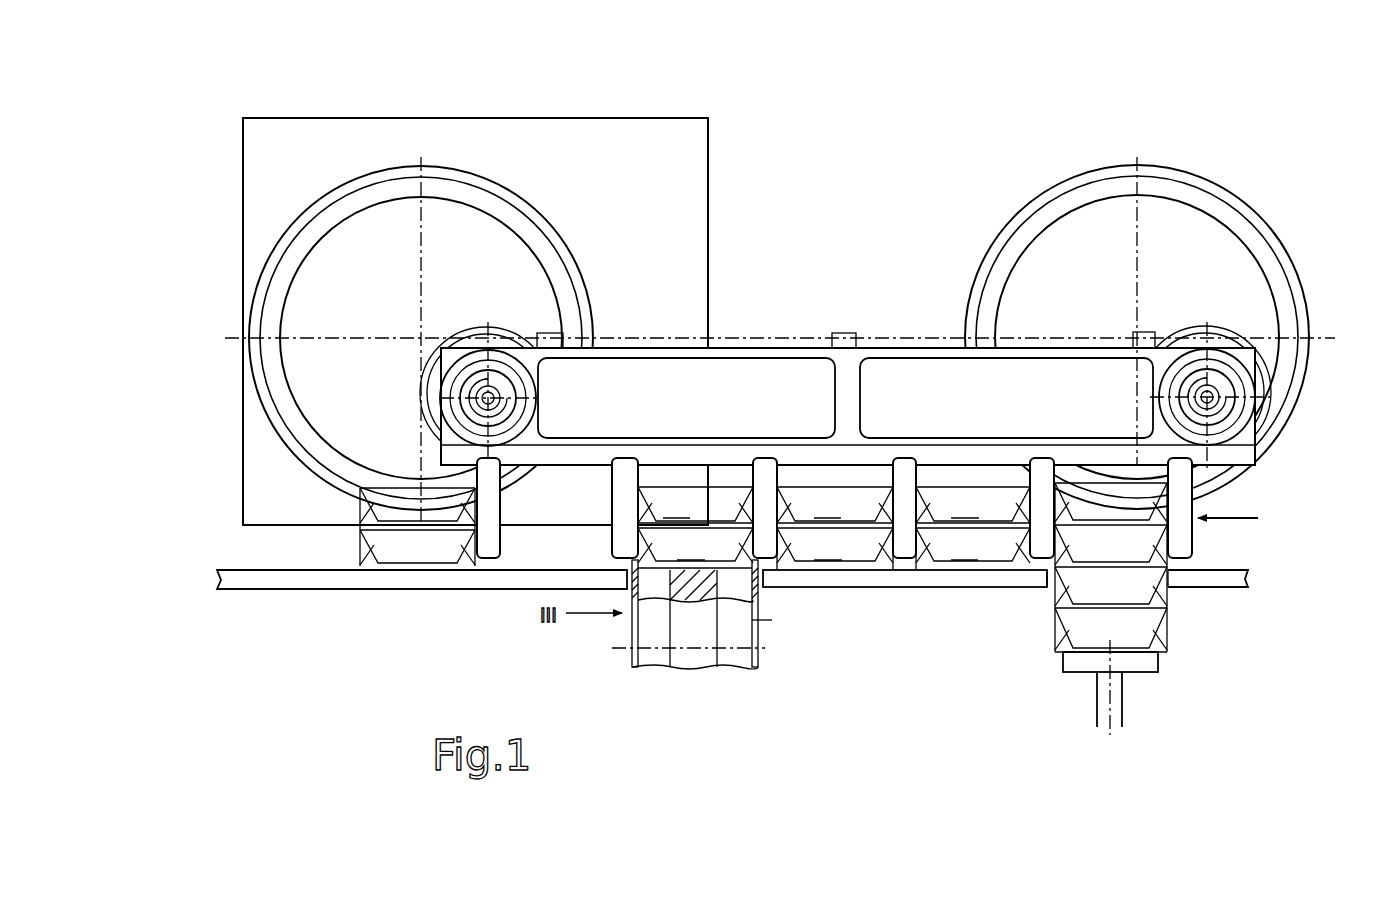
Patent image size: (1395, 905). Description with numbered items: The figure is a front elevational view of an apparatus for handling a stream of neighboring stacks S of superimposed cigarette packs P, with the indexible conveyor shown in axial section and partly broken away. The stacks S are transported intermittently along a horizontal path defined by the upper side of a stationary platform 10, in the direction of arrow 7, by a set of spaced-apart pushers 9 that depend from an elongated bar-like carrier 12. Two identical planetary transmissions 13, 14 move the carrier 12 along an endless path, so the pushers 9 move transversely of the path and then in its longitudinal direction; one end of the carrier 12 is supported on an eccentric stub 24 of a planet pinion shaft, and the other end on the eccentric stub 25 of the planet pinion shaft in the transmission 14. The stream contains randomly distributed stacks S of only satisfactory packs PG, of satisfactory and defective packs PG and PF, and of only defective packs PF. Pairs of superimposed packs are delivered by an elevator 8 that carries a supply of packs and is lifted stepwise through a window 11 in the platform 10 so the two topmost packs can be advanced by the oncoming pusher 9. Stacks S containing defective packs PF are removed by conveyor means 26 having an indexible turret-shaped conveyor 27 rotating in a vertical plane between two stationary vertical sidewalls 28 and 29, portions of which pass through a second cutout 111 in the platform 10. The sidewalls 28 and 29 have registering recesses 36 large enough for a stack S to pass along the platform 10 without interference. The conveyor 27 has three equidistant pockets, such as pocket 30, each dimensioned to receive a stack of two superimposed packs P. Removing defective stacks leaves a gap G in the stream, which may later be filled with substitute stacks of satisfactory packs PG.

The planetary transmission 13 is at (501, 186).
The planetary transmission 14 is at (1239, 195).
The carrier 12 is at (741, 381).
The eccentric stub 24 is at (490, 391).
The eccentric stub 25 is at (1226, 400).
The pushers 9 is at (1040, 486).
The pocket 30 is at (735, 471).
The platform 10 is at (953, 578).
The sidewall 28 is at (632, 625).
The indexible conveyor 27 is at (697, 586).
The conveyor means 26 is at (628, 660).
The sidewall 29 is at (772, 625).
The second cutout 111 is at (763, 568).
The recess 36 is at (600, 565).
The window 11 is at (1045, 578).
The elevator 8 is at (1115, 697).
The arrow 7 is at (1258, 518).
The cigarette packs P is at (363, 498).
The satisfactory pack PG is at (1087, 468).
The defective pack PF is at (1090, 468).
The gap G is at (553, 559).
The stack S is at (357, 553).